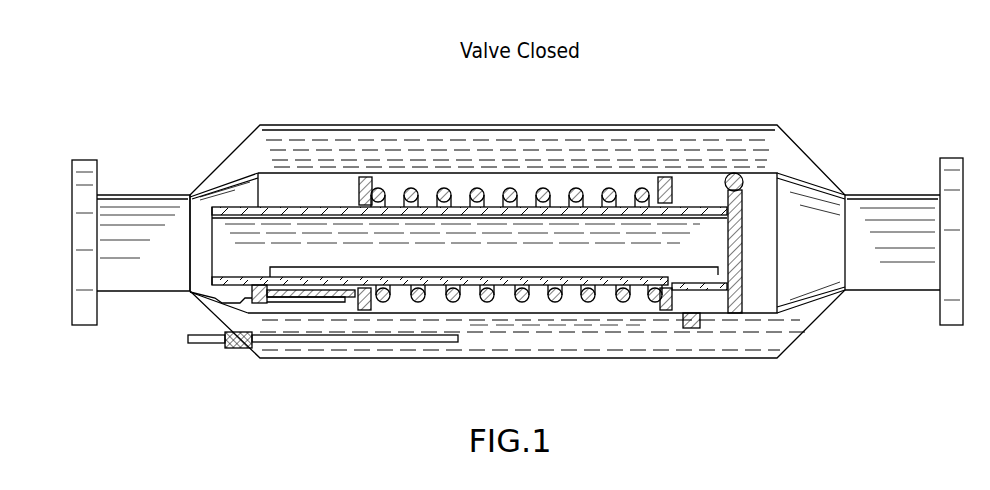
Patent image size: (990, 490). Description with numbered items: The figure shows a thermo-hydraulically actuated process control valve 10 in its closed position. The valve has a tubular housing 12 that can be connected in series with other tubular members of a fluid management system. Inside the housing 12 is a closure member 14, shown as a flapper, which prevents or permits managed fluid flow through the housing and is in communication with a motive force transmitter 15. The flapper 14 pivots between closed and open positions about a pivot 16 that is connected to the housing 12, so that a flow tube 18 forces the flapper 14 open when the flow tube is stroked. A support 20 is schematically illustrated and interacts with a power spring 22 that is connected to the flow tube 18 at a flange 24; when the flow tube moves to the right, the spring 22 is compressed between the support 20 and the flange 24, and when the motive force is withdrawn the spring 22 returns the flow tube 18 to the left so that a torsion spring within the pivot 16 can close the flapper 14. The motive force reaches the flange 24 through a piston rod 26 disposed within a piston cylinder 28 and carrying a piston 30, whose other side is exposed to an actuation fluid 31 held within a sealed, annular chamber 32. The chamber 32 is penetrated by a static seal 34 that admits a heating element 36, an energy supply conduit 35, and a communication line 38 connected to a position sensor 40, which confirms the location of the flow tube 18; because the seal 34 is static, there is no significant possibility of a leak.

The process control valve 10 is at (822, 130).
The tubular housing 12 is at (846, 194).
The closure member 14 is at (736, 268).
The motive force transmitter 15 is at (497, 267).
The pivot 16 is at (736, 173).
The flow tube 18 is at (700, 207).
The support 20 is at (663, 177).
The power spring 22 is at (542, 188).
The flange 24 is at (365, 177).
The piston rod 26 is at (346, 293).
The piston cylinder 28 is at (303, 299).
The piston 30 is at (262, 286).
The actuation fluid 31 is at (556, 346).
The sealed chamber 32 is at (590, 353).
The static seal 34 is at (232, 350).
The energy supply conduit 35 is at (191, 333).
The heating element 36 is at (438, 342).
The communication line 38 is at (488, 322).
The position sensor 40 is at (690, 330).